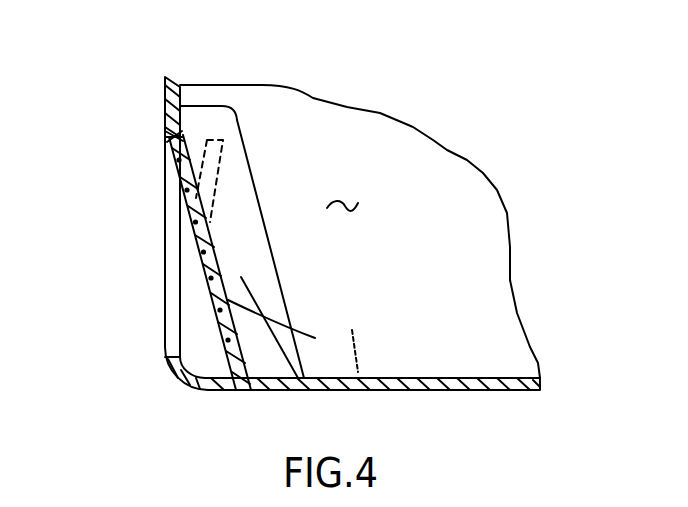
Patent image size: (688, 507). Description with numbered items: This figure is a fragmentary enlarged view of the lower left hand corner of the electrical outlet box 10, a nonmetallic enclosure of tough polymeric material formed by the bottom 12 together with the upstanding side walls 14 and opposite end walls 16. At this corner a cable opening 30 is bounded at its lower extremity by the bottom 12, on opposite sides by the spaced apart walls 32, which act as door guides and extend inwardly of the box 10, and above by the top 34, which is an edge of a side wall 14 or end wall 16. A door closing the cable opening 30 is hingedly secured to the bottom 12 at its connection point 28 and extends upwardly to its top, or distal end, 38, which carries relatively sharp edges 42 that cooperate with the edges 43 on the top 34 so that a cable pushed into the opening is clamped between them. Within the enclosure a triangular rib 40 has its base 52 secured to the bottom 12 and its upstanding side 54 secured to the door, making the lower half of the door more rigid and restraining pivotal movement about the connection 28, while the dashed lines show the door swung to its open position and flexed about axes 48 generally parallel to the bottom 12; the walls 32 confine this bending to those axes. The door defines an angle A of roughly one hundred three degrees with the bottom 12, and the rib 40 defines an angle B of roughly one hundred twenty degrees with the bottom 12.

The electrical outlet box 10 is at (511, 145).
The bottom 12 is at (380, 372).
The side walls 14 is at (347, 182).
The end walls 16 is at (181, 136).
The connection point 28 is at (240, 388).
The cable opening 30 is at (170, 184).
The walls (door guides) 32 is at (230, 144).
The top of cable opening 34 is at (164, 131).
The top (distal end) of door 38 is at (164, 132).
The rib 40 is at (214, 256).
The edges of door distal end 42 is at (181, 138).
The edges of opening top 43 is at (183, 137).
The axes 48 is at (211, 278).
The rib base 52 is at (271, 388).
The upstanding side of rib 54 is at (207, 282).
The angle A is at (345, 335).
The angle B is at (284, 333).